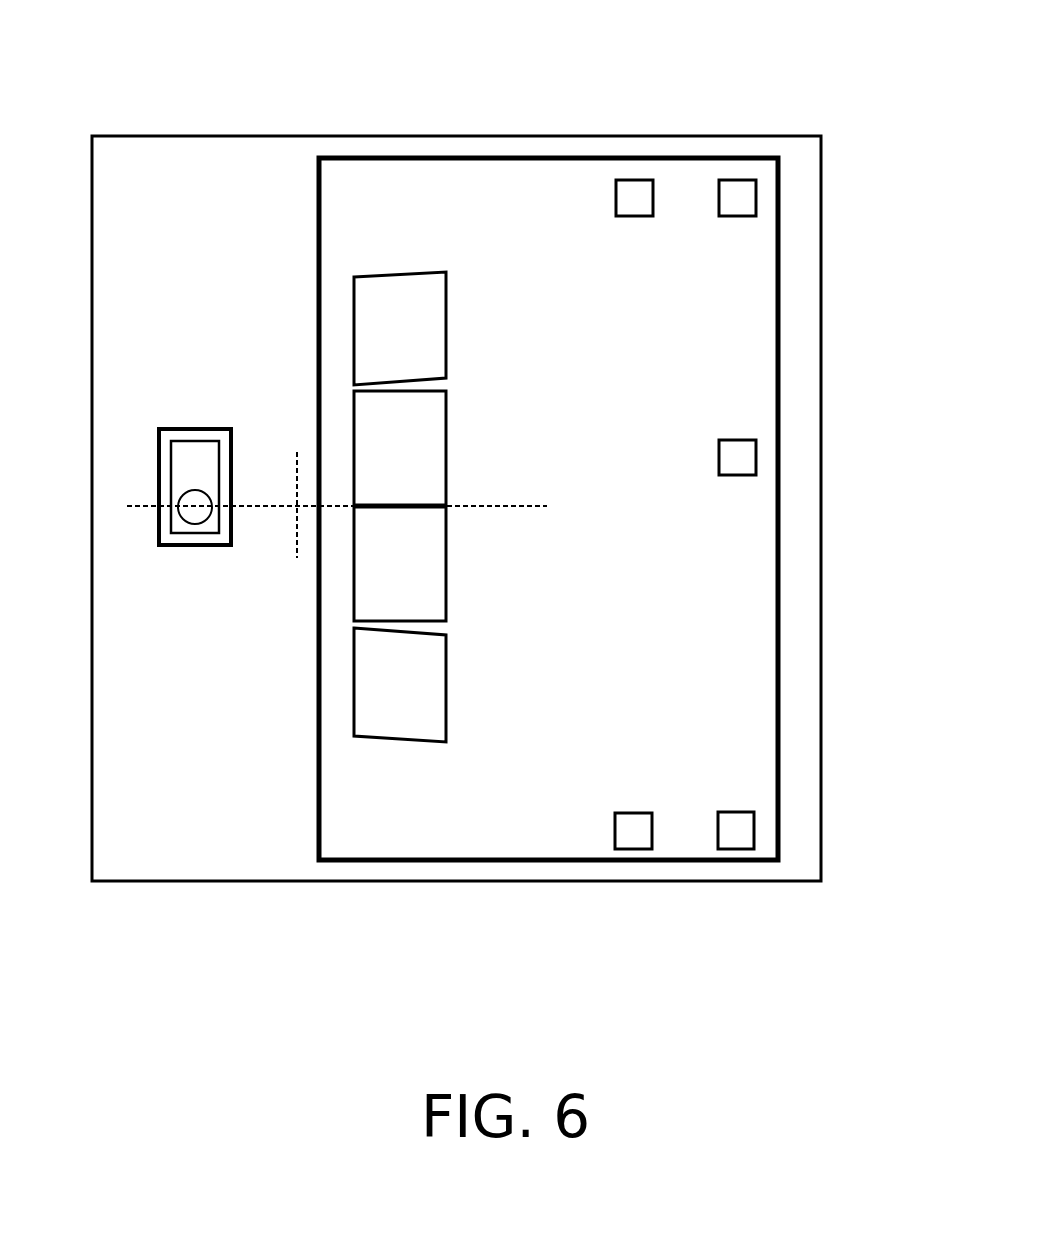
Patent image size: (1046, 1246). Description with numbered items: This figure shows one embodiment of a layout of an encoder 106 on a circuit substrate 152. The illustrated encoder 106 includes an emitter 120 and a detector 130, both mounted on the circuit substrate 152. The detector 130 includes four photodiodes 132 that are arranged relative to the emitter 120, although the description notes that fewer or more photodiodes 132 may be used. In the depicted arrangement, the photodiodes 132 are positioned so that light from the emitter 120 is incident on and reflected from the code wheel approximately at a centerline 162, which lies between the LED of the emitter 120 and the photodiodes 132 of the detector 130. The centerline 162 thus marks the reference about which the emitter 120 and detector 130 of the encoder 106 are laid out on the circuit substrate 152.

The encoder 106 is at (180, 66).
The emitter 120 is at (159, 457).
The detector 130 is at (778, 623).
The photodiodes 132 is at (446, 338).
The circuit substrate 152 is at (221, 865).
The centerline 162 is at (297, 533).